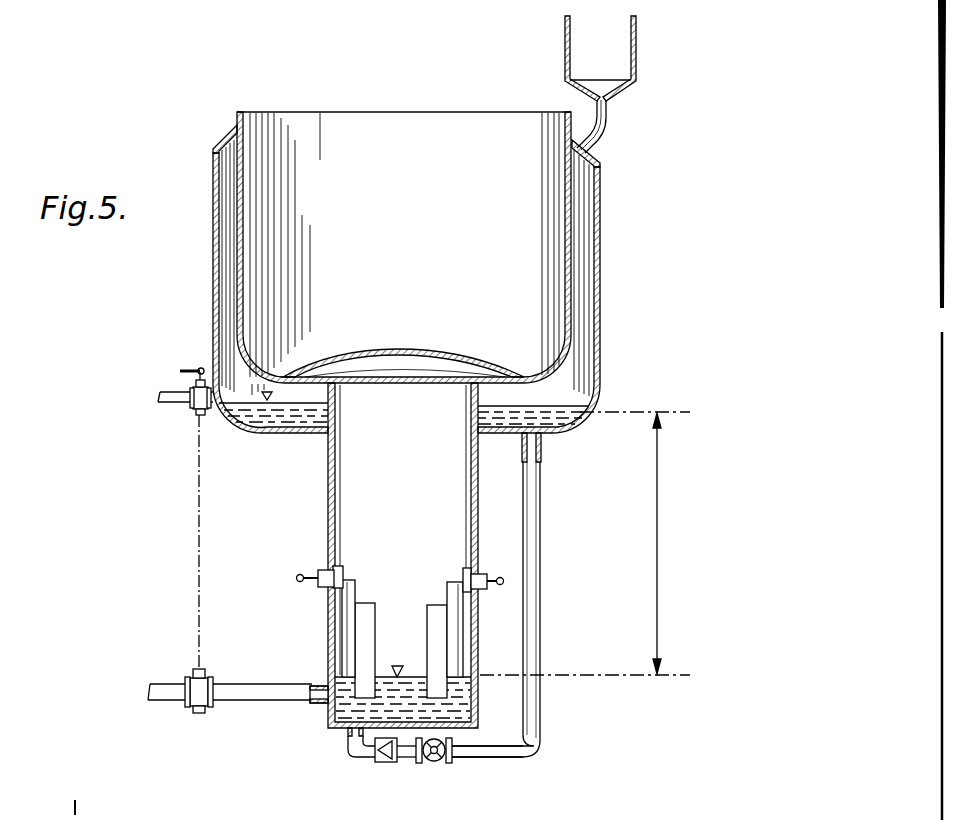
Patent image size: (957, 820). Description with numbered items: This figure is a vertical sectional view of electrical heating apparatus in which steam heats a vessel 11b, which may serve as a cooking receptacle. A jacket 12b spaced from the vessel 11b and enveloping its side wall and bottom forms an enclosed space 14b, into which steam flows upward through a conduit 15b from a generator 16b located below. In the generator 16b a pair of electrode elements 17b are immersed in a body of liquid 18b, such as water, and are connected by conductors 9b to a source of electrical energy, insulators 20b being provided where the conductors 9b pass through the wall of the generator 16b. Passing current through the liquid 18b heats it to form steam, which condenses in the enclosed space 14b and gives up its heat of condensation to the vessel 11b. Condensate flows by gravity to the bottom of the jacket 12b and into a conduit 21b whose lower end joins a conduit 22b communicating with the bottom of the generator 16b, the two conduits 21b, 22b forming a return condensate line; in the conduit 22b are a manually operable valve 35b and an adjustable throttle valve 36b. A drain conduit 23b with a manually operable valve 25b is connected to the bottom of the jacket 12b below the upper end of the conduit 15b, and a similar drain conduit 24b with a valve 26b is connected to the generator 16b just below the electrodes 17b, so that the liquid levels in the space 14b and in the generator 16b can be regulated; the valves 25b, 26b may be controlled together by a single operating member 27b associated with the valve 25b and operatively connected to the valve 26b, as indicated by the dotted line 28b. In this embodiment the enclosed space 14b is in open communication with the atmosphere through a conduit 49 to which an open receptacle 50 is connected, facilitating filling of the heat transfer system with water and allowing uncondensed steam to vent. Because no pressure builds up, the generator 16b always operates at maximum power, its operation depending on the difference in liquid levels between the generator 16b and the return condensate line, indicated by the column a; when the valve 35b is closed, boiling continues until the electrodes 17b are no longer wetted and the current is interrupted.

The open receptacle 50 is at (640, 71).
The conduit 49 is at (610, 126).
The vessel 11b is at (567, 243).
The jacket 12b is at (597, 293).
The enclosed space 14b is at (233, 262).
The operating member 27b is at (190, 371).
The drain conduit 23b is at (166, 400).
The manually operable valve 25b is at (218, 412).
The dotted line 28b is at (198, 507).
The conduit 15b is at (327, 480).
The generator 16b is at (331, 733).
The conductors 9b is at (313, 578).
The insulators 20b is at (345, 570).
The electrode elements 17b is at (433, 604).
The body of liquid 18b is at (412, 672).
The conduit 21b is at (541, 553).
The drain conduit 24b is at (262, 690).
The manually operable valve 26b is at (185, 706).
The adjustable throttle valve 36b is at (388, 762).
The conduit 22b is at (493, 748).
The manually operable valve 35b is at (443, 763).
The liquid column a is at (669, 561).